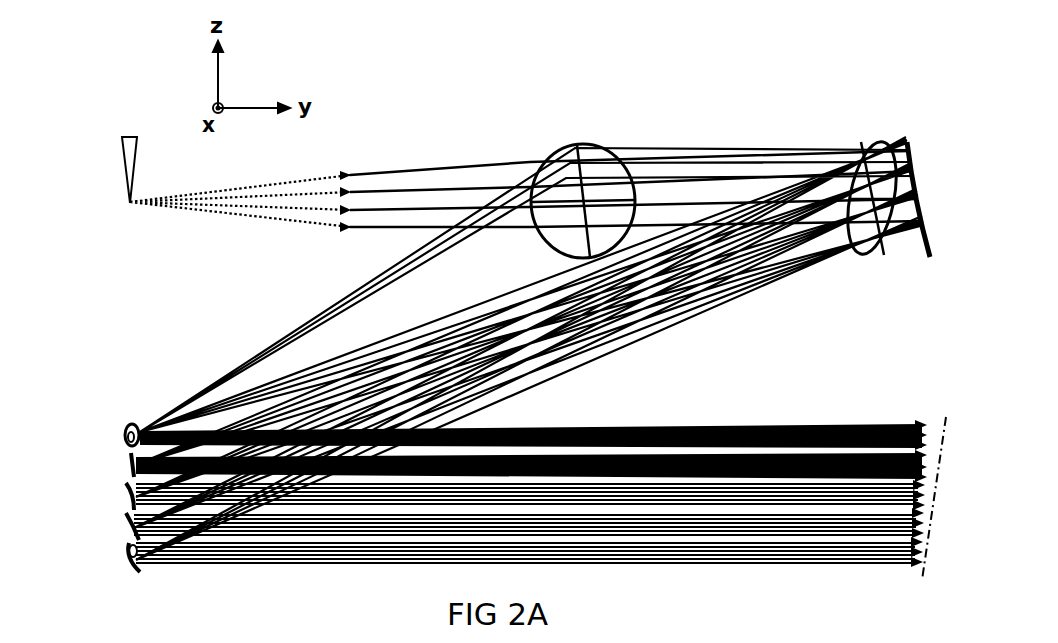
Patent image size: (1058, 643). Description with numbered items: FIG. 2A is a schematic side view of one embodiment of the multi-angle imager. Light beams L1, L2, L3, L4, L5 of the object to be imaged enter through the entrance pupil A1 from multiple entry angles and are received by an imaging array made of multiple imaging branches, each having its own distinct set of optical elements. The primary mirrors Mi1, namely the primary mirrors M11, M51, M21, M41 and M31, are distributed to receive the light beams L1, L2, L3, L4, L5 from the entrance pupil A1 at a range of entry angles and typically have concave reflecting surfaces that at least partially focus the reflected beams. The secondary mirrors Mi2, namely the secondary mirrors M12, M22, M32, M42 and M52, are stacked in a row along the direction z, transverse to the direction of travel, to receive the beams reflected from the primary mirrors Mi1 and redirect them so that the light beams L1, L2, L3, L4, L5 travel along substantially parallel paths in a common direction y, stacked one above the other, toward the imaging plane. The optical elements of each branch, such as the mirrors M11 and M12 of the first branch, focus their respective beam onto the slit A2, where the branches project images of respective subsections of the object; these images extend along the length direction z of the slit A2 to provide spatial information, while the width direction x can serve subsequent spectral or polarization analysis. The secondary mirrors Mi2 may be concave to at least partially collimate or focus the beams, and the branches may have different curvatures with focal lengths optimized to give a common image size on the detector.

The entrance pupil A1 is at (114, 200).
The slit A2 is at (944, 402).
The primary mirrors Mi1 is at (958, 103).
The secondary mirrors Mi2 is at (67, 397).
The primary mirror of first imaging branch M11 is at (583, 184).
The primary mirror of fifth imaging branch M51 is at (583, 184).
The primary mirror of second imaging branch M21 is at (843, 184).
The primary mirror of fourth imaging branch M41 is at (843, 184).
The primary mirror of third imaging branch M31 is at (929, 183).
The secondary mirror of first imaging branch M12 is at (118, 434).
The secondary mirror of second imaging branch M22 is at (116, 463).
The secondary mirror of third imaging branch M32 is at (116, 495).
The secondary mirror of fourth imaging branch M42 is at (117, 521).
The secondary mirror of fifth imaging branch M52 is at (117, 556).
The first light beam L1 is at (819, 439).
The second light beam L2 is at (819, 472).
The third light beam L3 is at (819, 507).
The fourth light beam L4 is at (819, 541).
The fifth light beam L5 is at (819, 572).